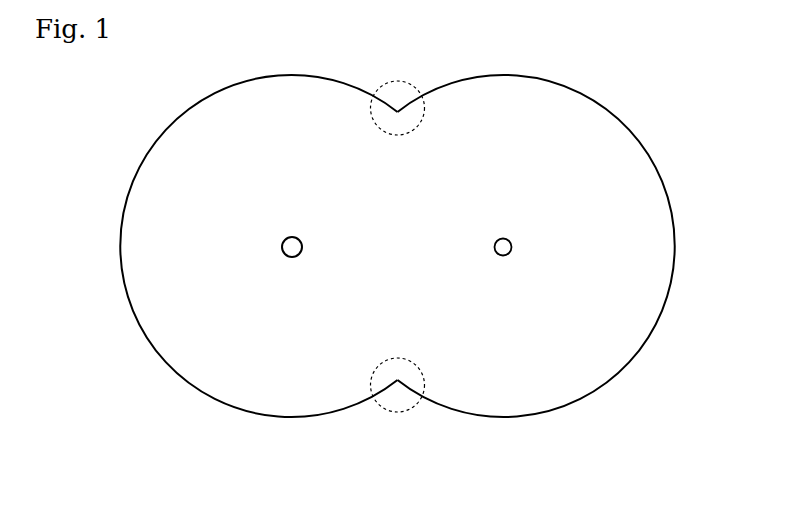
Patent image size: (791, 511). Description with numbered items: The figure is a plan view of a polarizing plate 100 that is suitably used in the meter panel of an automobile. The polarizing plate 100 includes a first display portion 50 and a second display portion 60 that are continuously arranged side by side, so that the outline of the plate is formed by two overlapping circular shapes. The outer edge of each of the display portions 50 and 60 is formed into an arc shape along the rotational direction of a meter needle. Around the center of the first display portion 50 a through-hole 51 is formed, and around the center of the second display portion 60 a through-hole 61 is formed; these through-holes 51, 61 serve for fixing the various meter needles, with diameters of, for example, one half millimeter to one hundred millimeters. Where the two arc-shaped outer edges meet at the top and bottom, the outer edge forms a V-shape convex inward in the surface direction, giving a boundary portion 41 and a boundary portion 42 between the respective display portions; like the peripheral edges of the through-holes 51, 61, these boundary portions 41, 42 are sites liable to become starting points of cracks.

The polarizing plate 100 is at (691, 74).
The first display portion 50 is at (172, 207).
The through-hole 51 is at (286, 238).
The second display portion 60 is at (623, 176).
The through-hole 61 is at (510, 253).
The boundary portion 41 is at (398, 107).
The boundary portion 42 is at (399, 382).